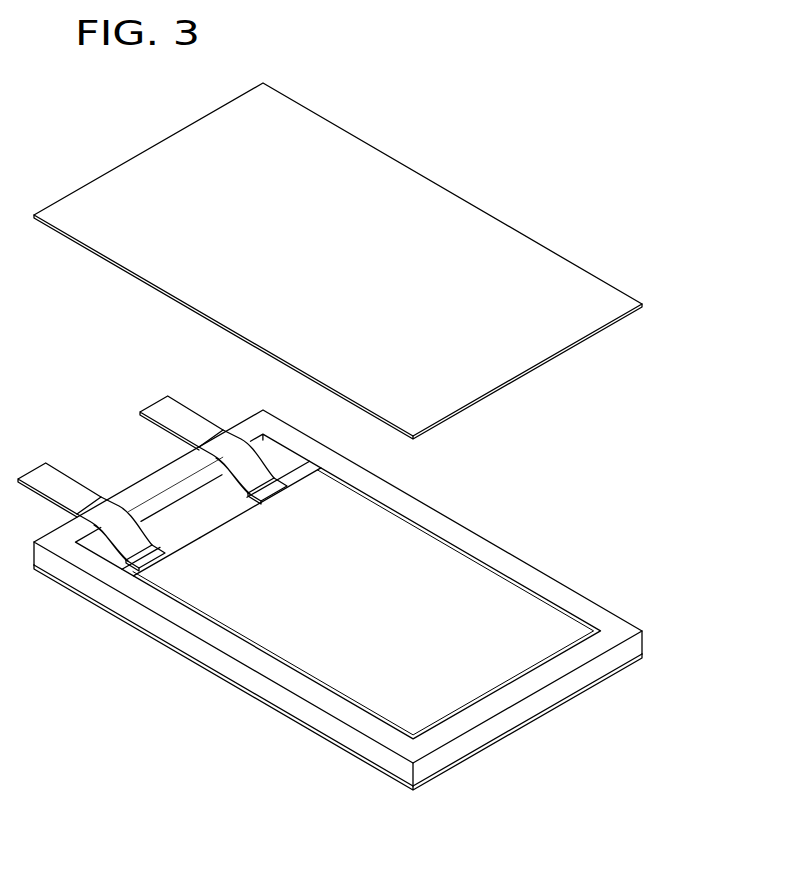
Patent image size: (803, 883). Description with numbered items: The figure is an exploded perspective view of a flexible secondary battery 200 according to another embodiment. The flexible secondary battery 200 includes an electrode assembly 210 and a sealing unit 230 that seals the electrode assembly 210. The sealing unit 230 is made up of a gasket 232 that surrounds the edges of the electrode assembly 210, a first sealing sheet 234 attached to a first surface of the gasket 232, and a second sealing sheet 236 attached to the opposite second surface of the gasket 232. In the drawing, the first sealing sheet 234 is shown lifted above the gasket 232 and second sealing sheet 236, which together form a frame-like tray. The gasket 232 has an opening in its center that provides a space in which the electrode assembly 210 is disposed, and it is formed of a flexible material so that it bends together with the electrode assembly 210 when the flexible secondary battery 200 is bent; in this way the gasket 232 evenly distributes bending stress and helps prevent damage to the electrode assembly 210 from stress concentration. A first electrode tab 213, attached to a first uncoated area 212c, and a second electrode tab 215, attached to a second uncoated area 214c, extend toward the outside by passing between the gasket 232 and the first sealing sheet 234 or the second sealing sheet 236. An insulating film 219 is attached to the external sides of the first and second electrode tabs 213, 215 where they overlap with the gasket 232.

The flexible secondary battery 200 is at (627, 211).
The electrode assembly 210 is at (481, 580).
The first uncoated area 212c is at (142, 573).
The first electrode tab 213 is at (48, 468).
The second uncoated area 214c is at (313, 478).
The second electrode tab 215 is at (170, 405).
The insulating film 219 is at (107, 507).
The sealing unit 230 is at (705, 305).
The gasket 232 is at (617, 623).
The first sealing sheet 234 is at (645, 306).
The second sealing sheet 236 is at (643, 655).